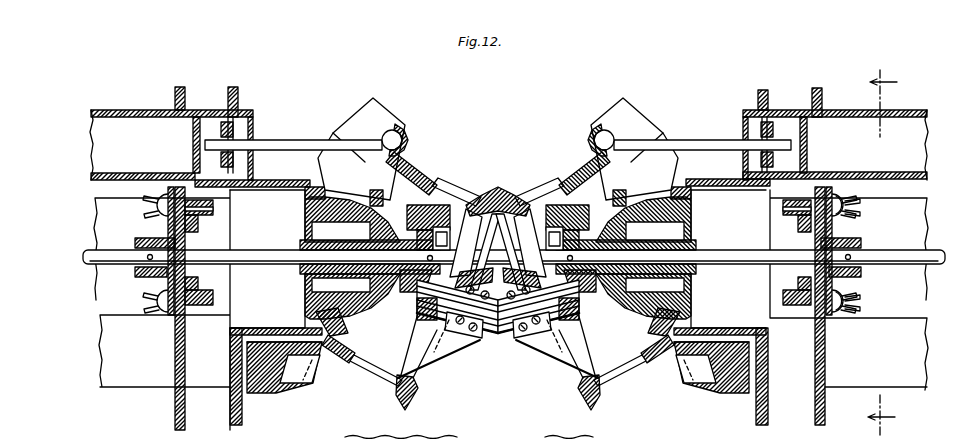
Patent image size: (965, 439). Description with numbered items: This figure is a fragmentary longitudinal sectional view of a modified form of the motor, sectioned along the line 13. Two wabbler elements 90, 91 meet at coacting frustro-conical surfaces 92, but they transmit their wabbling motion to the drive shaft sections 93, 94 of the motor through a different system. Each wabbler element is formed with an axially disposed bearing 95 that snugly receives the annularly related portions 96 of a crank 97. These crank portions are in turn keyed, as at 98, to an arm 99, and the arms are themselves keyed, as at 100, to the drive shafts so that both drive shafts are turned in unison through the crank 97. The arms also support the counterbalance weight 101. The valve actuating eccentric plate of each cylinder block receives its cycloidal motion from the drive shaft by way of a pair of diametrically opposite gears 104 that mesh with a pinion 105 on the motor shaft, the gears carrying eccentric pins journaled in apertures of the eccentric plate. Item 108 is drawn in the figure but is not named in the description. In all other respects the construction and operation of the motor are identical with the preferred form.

The section line 13- 13 is at (882, 246).
The wabbler element 90 is at (409, 170).
The wabbler element 91 is at (590, 176).
The frustro-conical surfaces 92 is at (502, 185).
The drive shaft section 93 is at (267, 252).
The drive shaft section 94 is at (738, 254).
The axially disposed bearing 95 is at (523, 347).
The annularly related portions 96 is at (510, 303).
The crank 97 is at (492, 336).
The key 98 is at (417, 306).
The arm 99 is at (423, 278).
The key 100 is at (446, 266).
The counterbalance weight 101 is at (441, 204).
The gears 104 is at (181, 191).
The pinion 105 is at (186, 269).
The wing nut 108 is at (832, 194).